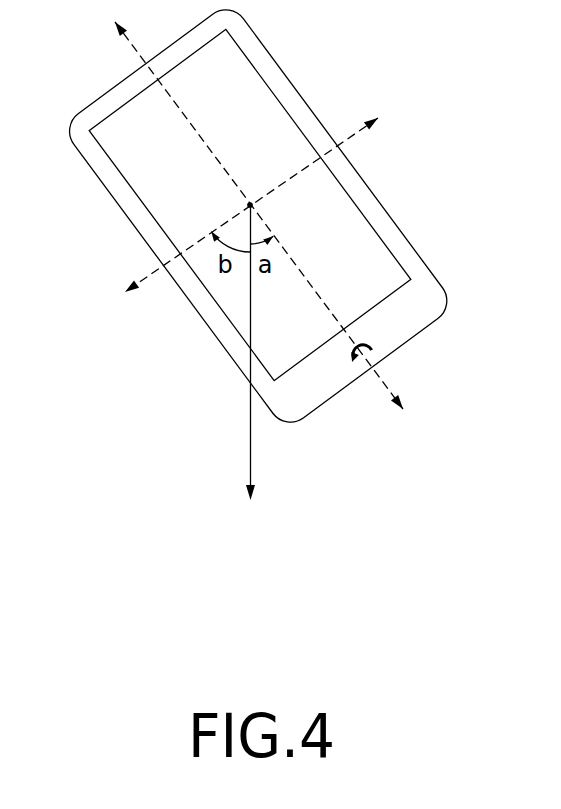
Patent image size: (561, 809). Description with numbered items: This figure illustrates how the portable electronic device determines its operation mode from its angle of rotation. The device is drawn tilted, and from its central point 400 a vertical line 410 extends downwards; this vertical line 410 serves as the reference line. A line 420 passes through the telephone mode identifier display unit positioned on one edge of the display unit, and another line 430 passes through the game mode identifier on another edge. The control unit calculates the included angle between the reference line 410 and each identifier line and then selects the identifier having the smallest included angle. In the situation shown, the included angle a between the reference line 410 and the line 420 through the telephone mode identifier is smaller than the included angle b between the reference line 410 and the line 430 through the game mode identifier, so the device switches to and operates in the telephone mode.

The central point 400 is at (250, 203).
The vertical line 410 is at (250, 442).
The line passing through the telephone mode identifier 420 is at (403, 412).
The line passing through the game mode identifier 430 is at (122, 291).